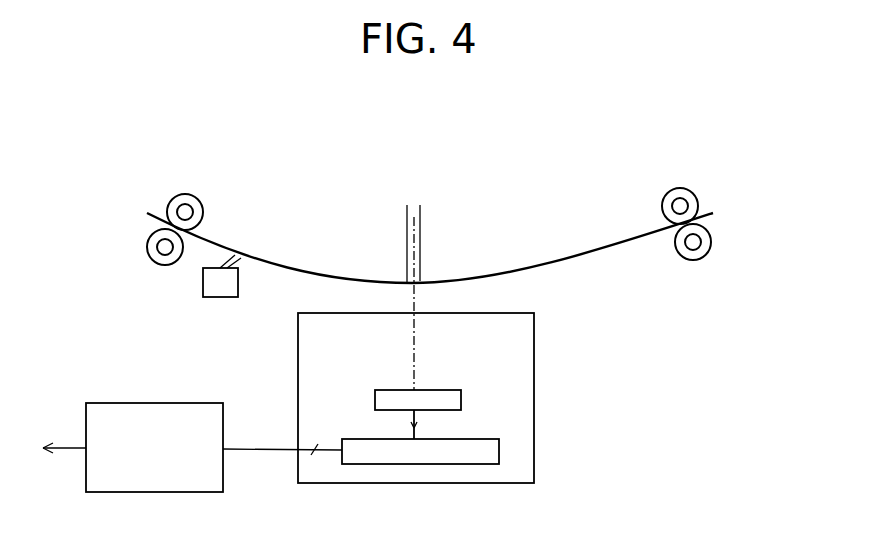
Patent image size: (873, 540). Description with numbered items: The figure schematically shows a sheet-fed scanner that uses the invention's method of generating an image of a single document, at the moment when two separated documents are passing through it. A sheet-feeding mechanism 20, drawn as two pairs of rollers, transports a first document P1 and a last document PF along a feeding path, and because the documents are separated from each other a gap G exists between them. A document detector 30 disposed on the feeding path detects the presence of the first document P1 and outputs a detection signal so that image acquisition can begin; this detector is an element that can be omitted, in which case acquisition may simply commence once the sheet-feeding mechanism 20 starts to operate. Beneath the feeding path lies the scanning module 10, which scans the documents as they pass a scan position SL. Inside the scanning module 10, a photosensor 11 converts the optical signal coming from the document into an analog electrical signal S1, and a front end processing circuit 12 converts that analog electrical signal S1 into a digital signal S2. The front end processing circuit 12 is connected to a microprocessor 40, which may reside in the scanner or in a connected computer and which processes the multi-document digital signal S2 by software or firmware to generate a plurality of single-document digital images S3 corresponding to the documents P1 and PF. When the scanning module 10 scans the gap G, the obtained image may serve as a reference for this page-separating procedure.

The scanning module 10 is at (523, 428).
The photosensor 11 is at (461, 398).
The front end processing circuit 12 is at (495, 457).
The sheet-feeding mechanism 20 is at (147, 248).
The document detector 30 is at (218, 297).
The microprocessor 40 is at (145, 408).
The gap G is at (437, 200).
The first document P1 is at (267, 260).
The last document PF is at (583, 257).
The scan position SL is at (415, 300).
The analog electrical signal S1 is at (434, 424).
The digital signal S2 is at (282, 439).
The single-document digital images S3 is at (64, 433).